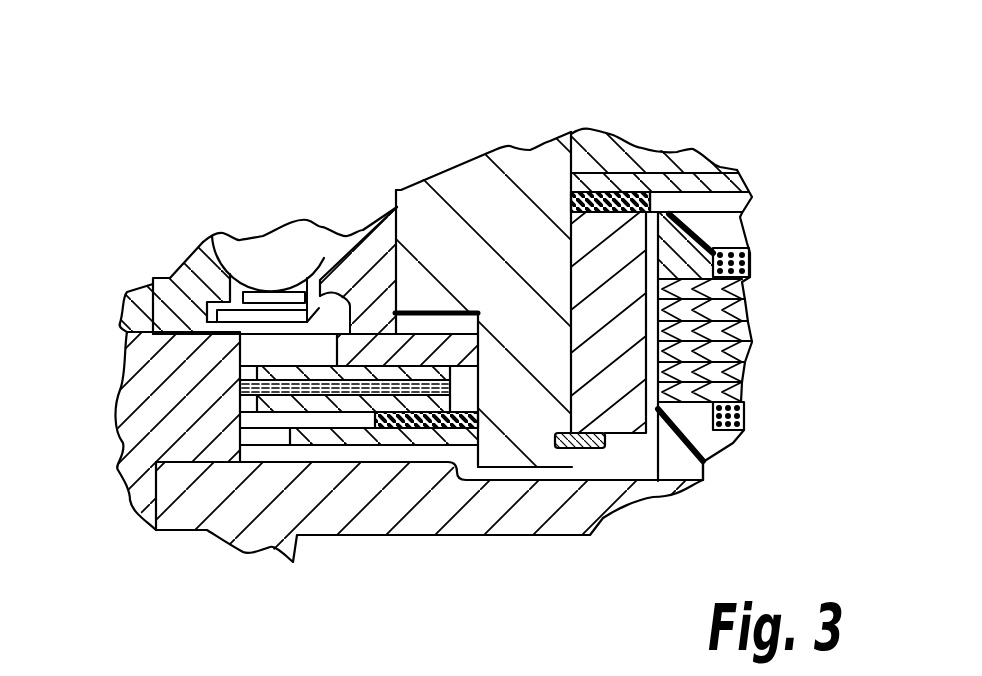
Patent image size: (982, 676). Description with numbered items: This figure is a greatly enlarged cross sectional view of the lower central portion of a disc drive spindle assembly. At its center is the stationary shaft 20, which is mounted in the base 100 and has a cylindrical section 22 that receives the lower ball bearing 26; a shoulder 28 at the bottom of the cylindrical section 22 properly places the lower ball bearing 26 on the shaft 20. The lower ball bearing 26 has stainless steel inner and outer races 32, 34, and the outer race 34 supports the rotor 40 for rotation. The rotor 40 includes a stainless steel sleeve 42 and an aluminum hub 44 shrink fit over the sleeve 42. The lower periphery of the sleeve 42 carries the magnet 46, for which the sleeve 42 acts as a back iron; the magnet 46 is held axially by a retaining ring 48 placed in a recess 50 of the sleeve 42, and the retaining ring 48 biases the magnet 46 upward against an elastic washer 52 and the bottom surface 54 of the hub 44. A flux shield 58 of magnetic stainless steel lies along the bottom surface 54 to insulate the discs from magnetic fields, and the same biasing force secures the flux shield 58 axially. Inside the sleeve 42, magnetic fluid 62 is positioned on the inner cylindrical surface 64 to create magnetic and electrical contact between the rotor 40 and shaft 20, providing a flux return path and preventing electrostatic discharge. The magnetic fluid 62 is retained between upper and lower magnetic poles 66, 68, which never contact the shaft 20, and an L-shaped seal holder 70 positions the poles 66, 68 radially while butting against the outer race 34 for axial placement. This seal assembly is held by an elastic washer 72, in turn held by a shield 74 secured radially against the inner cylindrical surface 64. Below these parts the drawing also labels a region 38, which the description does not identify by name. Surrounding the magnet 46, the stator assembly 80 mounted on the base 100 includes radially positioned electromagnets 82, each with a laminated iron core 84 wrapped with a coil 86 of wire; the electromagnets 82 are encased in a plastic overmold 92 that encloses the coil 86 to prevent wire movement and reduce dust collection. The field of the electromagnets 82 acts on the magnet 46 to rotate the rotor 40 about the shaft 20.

The stationary shaft 20 is at (140, 372).
The cylindrical section 22 is at (147, 290).
The lower ball bearing 26 is at (254, 262).
The shoulder 28 is at (133, 333).
The inner race 32 is at (195, 248).
The outer race 34 is at (345, 245).
The base plate 38 is at (147, 498).
The rotor 40 is at (595, 105).
The sleeve 42 is at (525, 152).
The hub 44 is at (610, 150).
The magnet 46 is at (618, 405).
The retaining ring 48 is at (590, 442).
The recess 50 is at (543, 447).
The elastic washer 52 is at (642, 197).
The bottom surface 54 is at (670, 175).
The flux shield 58 is at (732, 185).
The magnetic fluid 62 is at (240, 386).
The inner cylindrical surface 64 is at (481, 366).
The upper magnetic pole 66 is at (303, 368).
The lower magnetic pole 68 is at (300, 403).
The seal holder 70 is at (428, 340).
The elastic washer 72 is at (437, 430).
The shield 74 is at (363, 437).
The stator assembly 80 is at (728, 508).
The electromagnet 82 is at (772, 338).
The core 84 is at (722, 310).
The coil 86 is at (750, 255).
The overmold 92 is at (712, 233).
The base 100 is at (185, 520).